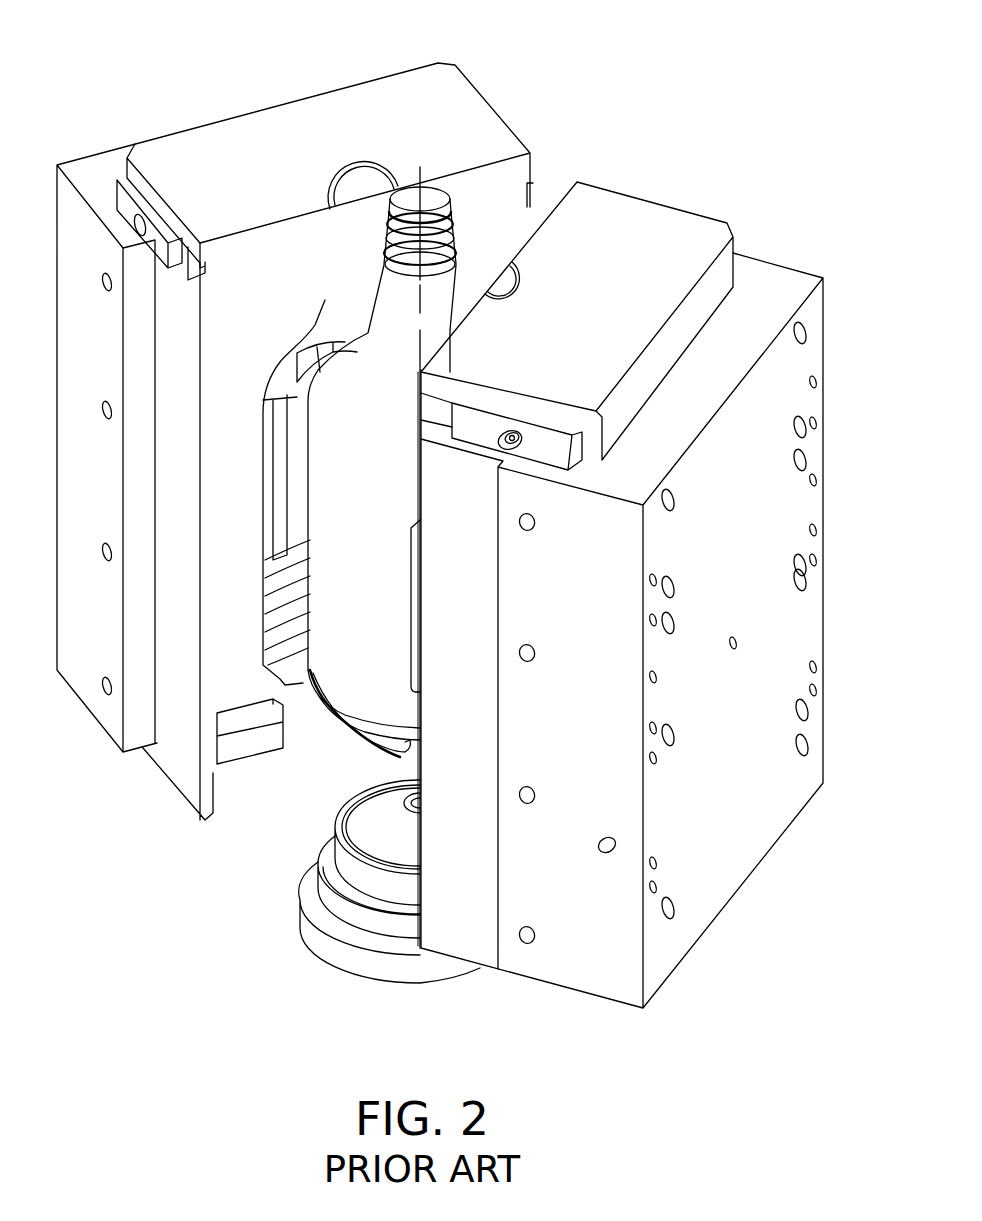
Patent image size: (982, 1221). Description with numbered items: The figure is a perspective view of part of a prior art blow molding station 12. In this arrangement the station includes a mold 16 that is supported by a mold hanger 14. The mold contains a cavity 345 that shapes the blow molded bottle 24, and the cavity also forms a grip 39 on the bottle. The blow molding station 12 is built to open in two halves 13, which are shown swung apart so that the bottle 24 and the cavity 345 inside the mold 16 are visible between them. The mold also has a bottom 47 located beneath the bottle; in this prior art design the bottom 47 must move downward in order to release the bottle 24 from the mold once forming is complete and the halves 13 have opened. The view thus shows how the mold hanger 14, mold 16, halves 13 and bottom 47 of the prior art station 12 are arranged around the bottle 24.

The blow molding station 12 is at (675, 141).
The halves 13 is at (520, 135).
The mold hanger 14 is at (72, 690).
The mold 16 is at (160, 772).
The bottle 24 is at (408, 180).
The grip 39 is at (410, 598).
The bottom 47 is at (438, 985).
The cavity 345 is at (333, 272).